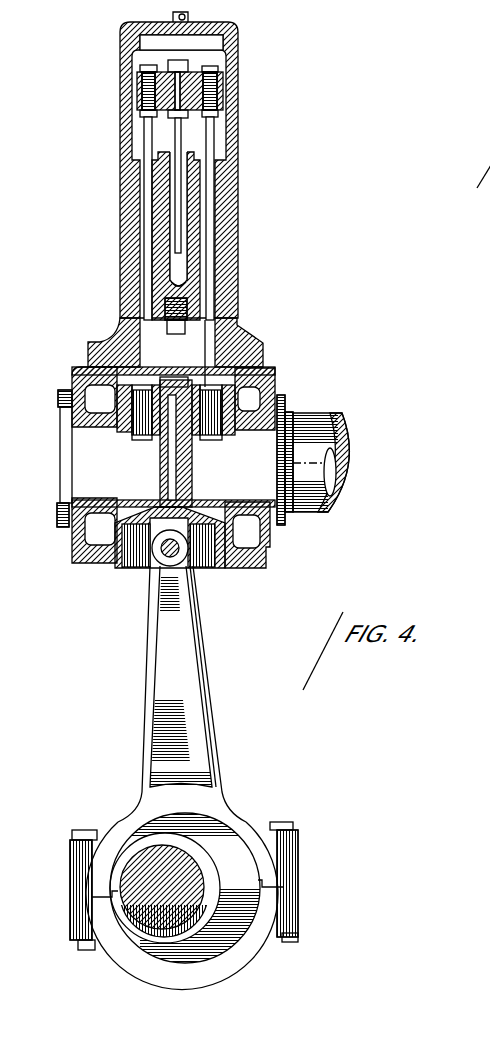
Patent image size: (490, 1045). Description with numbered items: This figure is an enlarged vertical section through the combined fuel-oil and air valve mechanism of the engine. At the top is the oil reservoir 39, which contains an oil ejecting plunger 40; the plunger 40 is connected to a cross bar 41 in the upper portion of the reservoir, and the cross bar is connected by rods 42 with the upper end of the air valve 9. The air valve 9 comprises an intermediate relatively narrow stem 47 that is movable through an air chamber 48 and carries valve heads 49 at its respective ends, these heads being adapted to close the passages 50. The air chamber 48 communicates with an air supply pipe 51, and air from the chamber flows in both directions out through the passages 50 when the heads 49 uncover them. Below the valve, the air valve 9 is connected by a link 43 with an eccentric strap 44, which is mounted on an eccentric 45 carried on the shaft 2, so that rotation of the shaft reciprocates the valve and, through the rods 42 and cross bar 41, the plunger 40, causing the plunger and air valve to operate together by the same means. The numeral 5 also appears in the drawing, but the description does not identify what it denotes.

The shaft 2 is at (133, 932).
The nut 5 is at (172, 378).
The air valve 9 is at (188, 467).
The oil reservoir 39 is at (220, 132).
The oil ejecting plunger 40 is at (177, 225).
The cross bar 41 is at (139, 82).
The rods 42 is at (142, 336).
The link 43 is at (188, 665).
The eccentric strap 44 is at (233, 808).
The eccentric 45 is at (230, 940).
The stem 47 is at (158, 468).
The air chamber 48 is at (75, 453).
The valve heads 49 is at (262, 389).
The passages 50 is at (90, 400).
The air supply pipe 51 is at (332, 440).